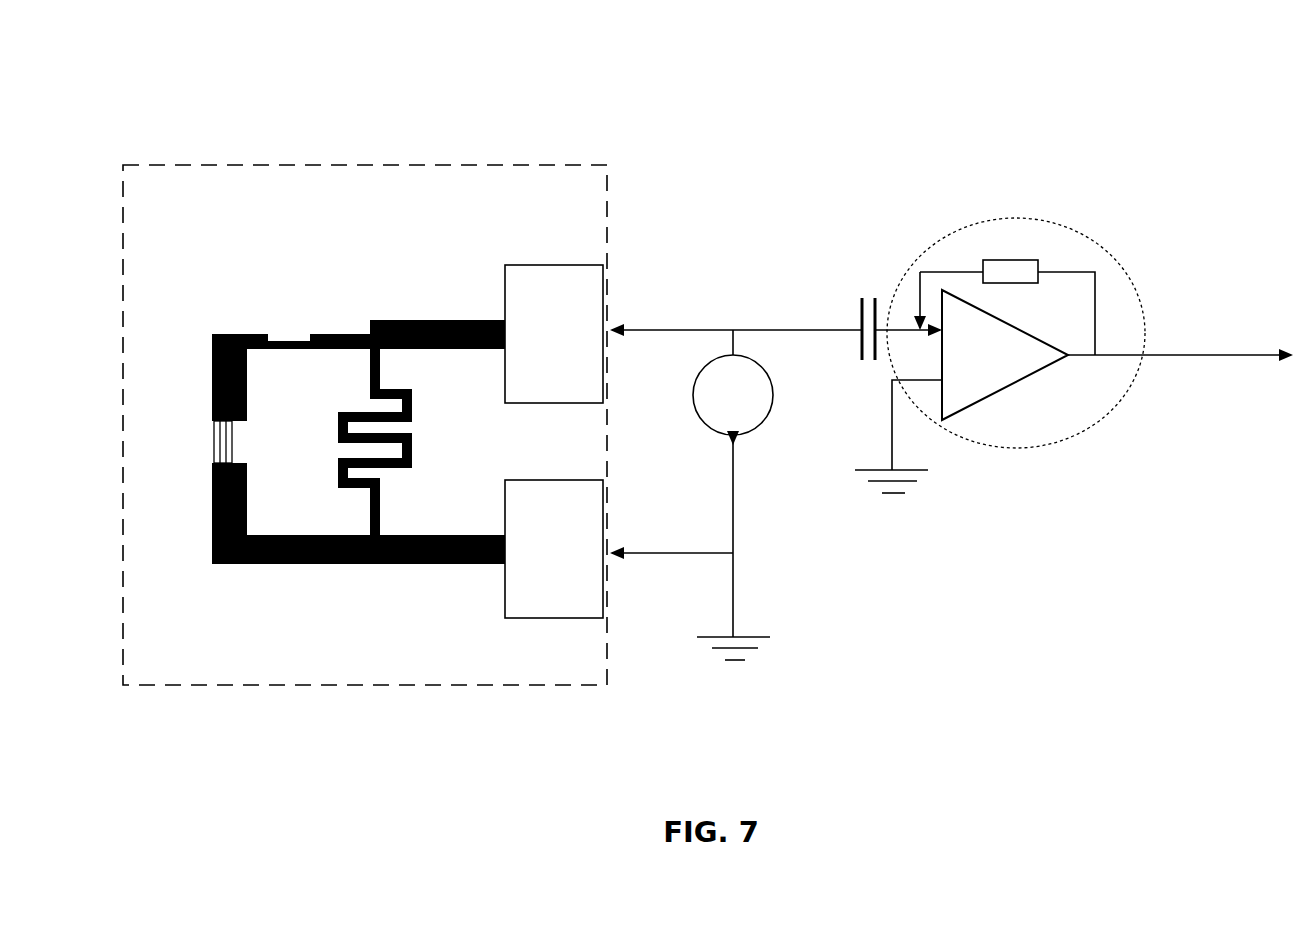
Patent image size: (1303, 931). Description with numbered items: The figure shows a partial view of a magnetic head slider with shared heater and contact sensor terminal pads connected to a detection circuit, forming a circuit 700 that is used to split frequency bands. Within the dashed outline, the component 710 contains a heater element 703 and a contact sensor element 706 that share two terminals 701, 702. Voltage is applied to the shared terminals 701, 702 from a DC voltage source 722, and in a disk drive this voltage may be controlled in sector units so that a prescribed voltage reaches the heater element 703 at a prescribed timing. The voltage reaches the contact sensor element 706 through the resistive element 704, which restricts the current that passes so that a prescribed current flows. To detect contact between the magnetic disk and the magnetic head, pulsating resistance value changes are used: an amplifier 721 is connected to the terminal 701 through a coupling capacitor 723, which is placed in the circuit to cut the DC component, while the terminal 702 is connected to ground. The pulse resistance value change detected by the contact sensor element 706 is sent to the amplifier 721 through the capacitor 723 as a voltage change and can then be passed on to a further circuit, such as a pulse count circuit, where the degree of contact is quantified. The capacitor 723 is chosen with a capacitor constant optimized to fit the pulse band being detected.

The circuit 700 is at (551, 105).
The terminal 701 is at (554, 334).
The terminal 702 is at (554, 549).
The heater element 703 is at (428, 430).
The resistive element 704 is at (290, 333).
The contact sensor element 706 is at (197, 450).
The component 710 is at (365, 687).
The amplifier 721 is at (1087, 252).
The DC voltage source 722 is at (697, 357).
The coupling capacitor 723 is at (877, 283).